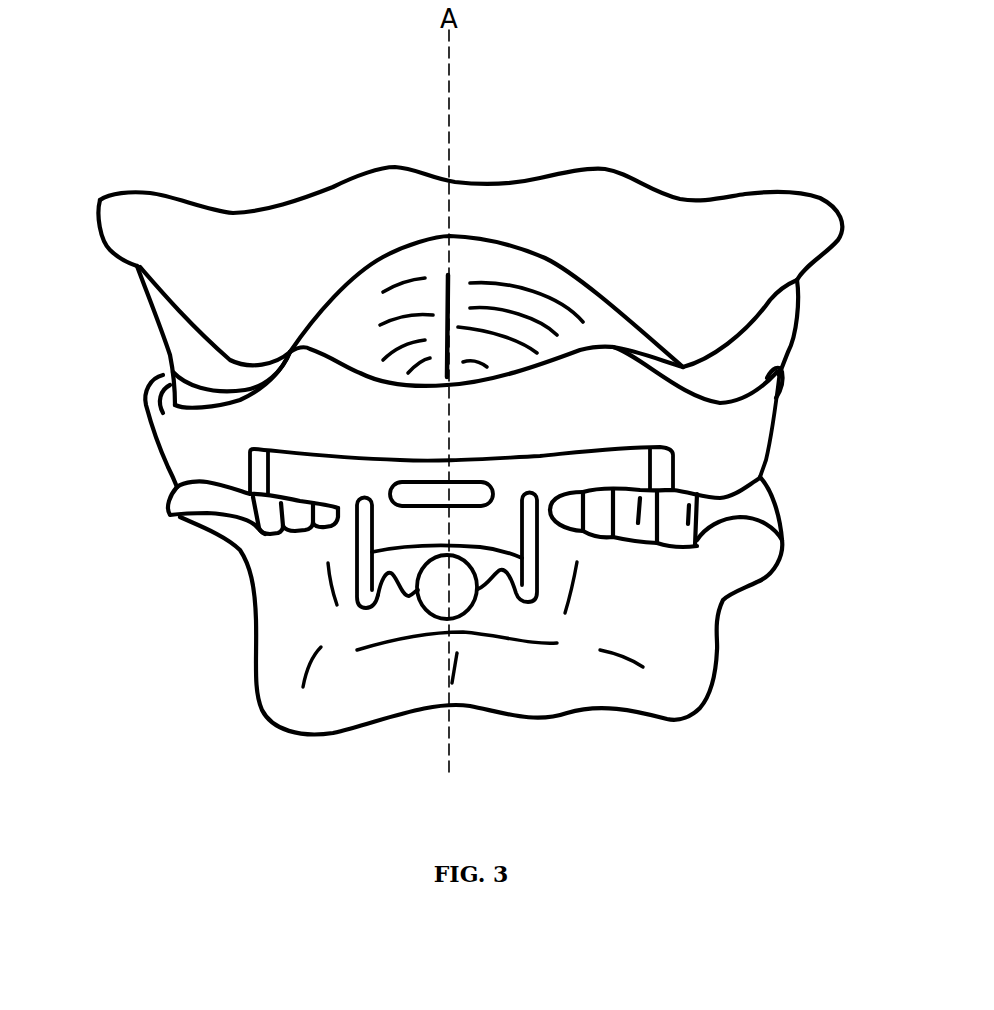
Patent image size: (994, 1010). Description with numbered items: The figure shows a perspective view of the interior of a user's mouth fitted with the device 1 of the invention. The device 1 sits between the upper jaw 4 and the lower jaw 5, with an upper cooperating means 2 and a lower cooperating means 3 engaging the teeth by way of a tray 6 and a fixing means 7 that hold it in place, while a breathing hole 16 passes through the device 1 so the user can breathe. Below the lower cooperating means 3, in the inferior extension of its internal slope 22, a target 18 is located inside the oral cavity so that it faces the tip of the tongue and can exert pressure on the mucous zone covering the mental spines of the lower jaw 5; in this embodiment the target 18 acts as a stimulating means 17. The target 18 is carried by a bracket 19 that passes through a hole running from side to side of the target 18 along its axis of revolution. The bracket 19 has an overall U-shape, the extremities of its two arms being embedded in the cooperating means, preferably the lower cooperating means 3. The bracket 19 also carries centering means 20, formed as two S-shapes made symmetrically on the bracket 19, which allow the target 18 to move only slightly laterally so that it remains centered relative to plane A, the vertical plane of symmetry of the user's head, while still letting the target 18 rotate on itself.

The device 1 is at (775, 455).
The upper cooperating means 2 is at (597, 373).
The lower cooperating means 3 is at (615, 476).
The upper jaw 4 is at (290, 240).
The lower jaw 5 is at (277, 605).
The tray 6 is at (735, 398).
The fixing means 7 is at (150, 386).
The breathing hole 16 is at (466, 496).
The stimulating means 17 is at (486, 604).
The target 18 is at (457, 593).
The bracket 19 is at (356, 572).
The centering means 20 is at (383, 605).
The internal slope of the lower cooperating means 22 is at (442, 521).